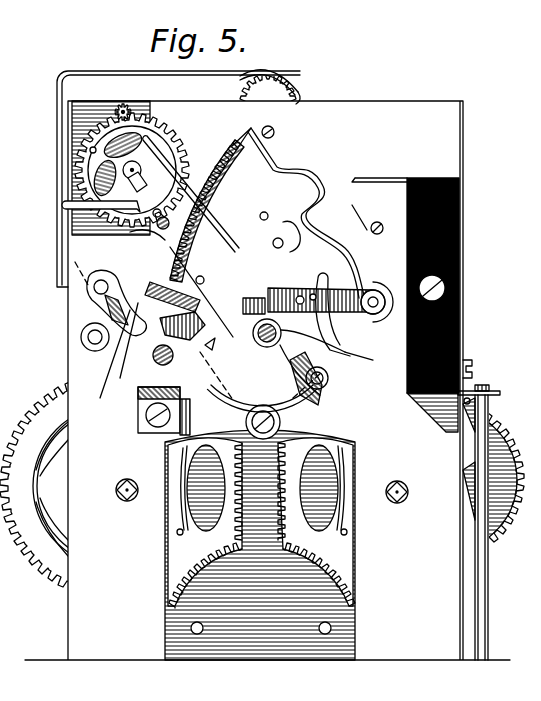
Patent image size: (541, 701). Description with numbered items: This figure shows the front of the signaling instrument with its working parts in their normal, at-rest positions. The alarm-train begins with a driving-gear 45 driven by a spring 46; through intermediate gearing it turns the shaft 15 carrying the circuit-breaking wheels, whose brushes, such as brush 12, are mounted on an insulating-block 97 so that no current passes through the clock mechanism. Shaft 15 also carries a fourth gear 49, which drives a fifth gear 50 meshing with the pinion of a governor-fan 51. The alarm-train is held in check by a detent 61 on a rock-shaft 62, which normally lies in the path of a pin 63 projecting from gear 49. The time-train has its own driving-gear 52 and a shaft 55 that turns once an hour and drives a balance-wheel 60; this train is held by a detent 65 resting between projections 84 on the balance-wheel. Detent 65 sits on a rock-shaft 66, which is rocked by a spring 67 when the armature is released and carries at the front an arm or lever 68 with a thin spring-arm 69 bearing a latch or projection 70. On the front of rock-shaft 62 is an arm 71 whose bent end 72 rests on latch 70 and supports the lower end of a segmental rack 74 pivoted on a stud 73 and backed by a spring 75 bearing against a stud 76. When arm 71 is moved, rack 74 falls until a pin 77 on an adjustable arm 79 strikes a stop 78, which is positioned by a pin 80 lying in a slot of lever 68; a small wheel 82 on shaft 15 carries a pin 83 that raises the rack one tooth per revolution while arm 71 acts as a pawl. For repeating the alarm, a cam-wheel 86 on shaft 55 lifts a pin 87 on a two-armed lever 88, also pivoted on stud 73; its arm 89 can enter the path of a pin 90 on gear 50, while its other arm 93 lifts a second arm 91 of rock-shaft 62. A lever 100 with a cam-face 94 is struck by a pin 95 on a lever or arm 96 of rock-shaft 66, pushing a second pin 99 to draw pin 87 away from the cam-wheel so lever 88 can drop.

The brush 12 is at (379, 170).
The shaft 15 is at (168, 220).
The driving-gear 45 is at (96, 484).
The spring 46 is at (52, 489).
The fourth gear 49 is at (145, 245).
The fifth gear 50 is at (100, 133).
The governor-fan 51 is at (100, 75).
The driving-gear 52 is at (261, 523).
The shaft 55 is at (262, 344).
The balance-wheel 60 is at (297, 100).
The detent 61 is at (75, 204).
The rock-shaft 62 is at (94, 345).
The pin 63 is at (143, 184).
The detent 65 is at (269, 73).
The rock-shaft 66 is at (94, 287).
The spring 67 is at (182, 326).
The arm or lever 68 is at (103, 305).
The spring-arm 69 is at (180, 285).
The latch or projection 70 is at (208, 267).
The arm 71 is at (122, 350).
The bent end 72 is at (165, 276).
The stud 73 is at (372, 318).
The segmental rack 74 is at (209, 205).
The spring 75 is at (354, 209).
The stud 76 is at (380, 223).
The pin 77 is at (273, 243).
The stop 78 is at (244, 308).
The arm 79 is at (293, 230).
The pin 80 is at (207, 350).
The small wheel 82 is at (158, 231).
The pin 83 is at (158, 209).
The projections 84 is at (300, 97).
The cam-wheel 86 is at (320, 345).
The pin 87 is at (300, 296).
The two-armed lever 88 is at (340, 290).
The arm 89 is at (148, 150).
The pin 90 is at (78, 147).
The second arm 91 is at (108, 364).
The arm 93 is at (157, 362).
The cam-face 94 is at (373, 360).
The pin 95 is at (322, 384).
The lever or arm 96 is at (308, 400).
The insulating-block 97 is at (424, 178).
The second pin 99 is at (314, 292).
The lever 100 is at (342, 328).